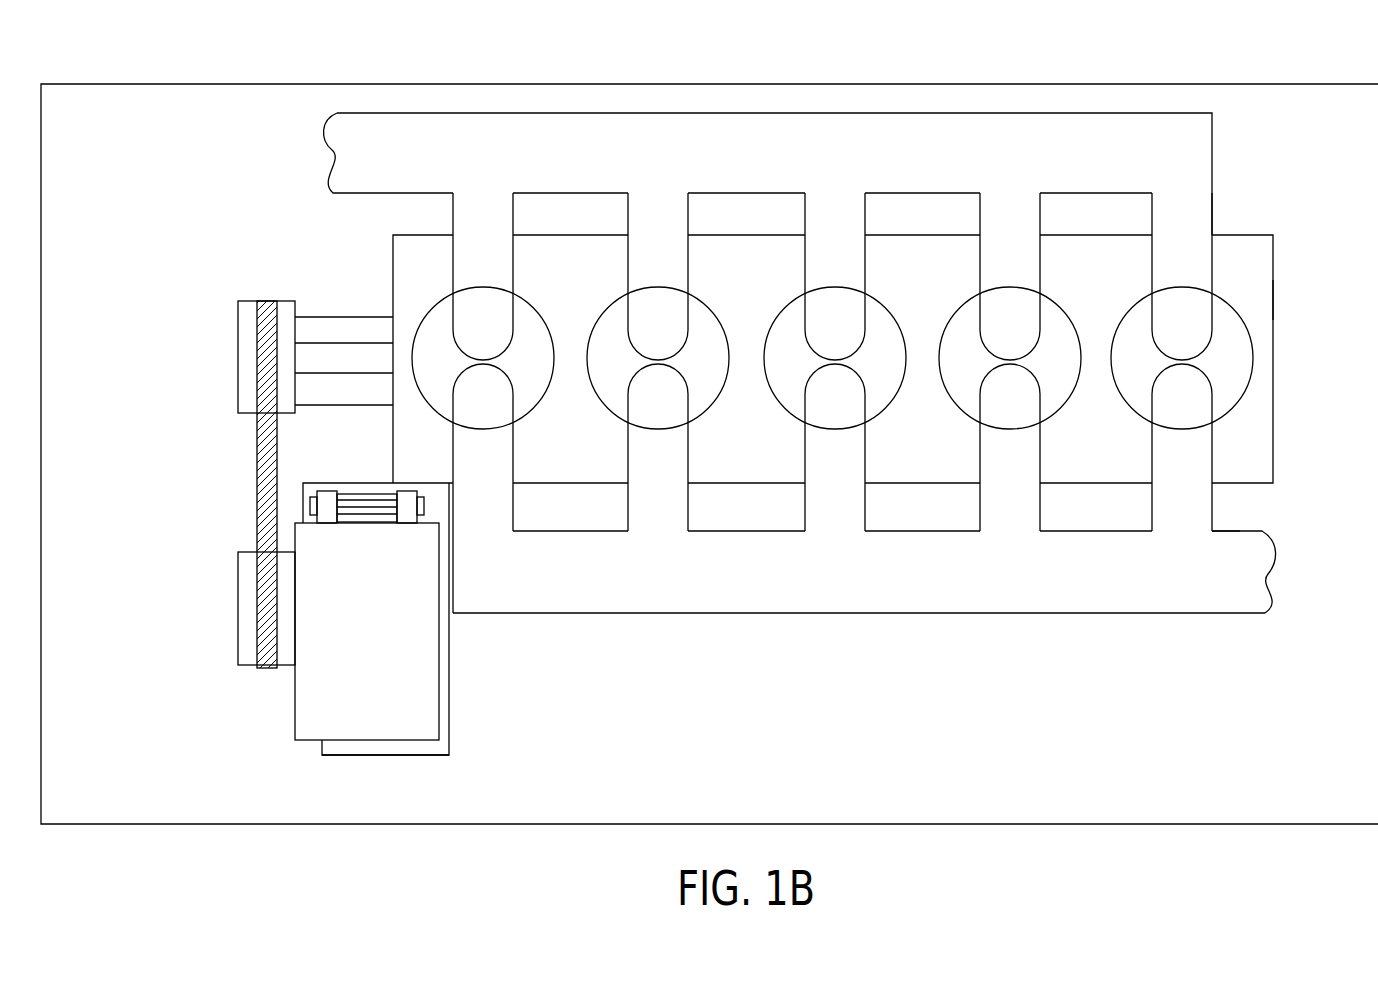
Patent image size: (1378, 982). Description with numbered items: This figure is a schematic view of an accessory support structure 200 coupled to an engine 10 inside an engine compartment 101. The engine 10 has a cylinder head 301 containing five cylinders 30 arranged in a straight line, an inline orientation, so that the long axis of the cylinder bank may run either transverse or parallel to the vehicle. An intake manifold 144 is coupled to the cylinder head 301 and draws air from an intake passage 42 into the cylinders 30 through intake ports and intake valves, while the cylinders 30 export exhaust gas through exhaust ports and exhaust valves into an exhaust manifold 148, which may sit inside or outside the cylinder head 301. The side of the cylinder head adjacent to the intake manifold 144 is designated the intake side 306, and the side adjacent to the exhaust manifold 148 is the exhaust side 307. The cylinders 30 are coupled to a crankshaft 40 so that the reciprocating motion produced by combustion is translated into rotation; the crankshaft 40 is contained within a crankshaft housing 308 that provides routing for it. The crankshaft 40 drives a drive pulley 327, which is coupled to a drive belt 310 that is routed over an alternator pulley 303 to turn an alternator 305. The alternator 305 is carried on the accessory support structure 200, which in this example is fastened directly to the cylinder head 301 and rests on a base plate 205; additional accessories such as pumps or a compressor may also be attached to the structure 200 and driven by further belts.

The engine compartment 101 is at (240, 66).
The engine 10 is at (1287, 382).
The cylinders 30 is at (832, 403).
The crankshaft 40 is at (344, 374).
The intake passage 42 is at (462, 153).
The intake manifold 144 is at (862, 153).
The exhaust manifold 148 is at (864, 572).
The accessory support structure 200 is at (470, 665).
The base plate 205 is at (370, 755).
The cylinder head 301 is at (378, 493).
The alternator pulley 303 is at (238, 578).
The alternator 305 is at (367, 631).
The intake side 306 is at (1275, 180).
The exhaust side 307 is at (1290, 512).
The crankshaft housing 308 is at (355, 316).
The drive belt 310 is at (268, 300).
The drive pulley 327 is at (238, 337).